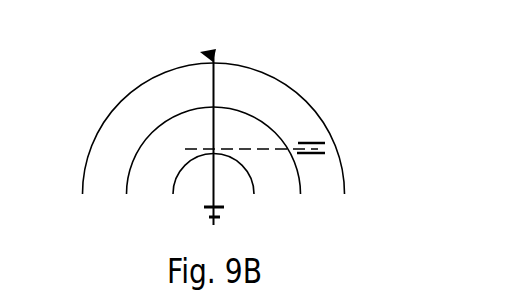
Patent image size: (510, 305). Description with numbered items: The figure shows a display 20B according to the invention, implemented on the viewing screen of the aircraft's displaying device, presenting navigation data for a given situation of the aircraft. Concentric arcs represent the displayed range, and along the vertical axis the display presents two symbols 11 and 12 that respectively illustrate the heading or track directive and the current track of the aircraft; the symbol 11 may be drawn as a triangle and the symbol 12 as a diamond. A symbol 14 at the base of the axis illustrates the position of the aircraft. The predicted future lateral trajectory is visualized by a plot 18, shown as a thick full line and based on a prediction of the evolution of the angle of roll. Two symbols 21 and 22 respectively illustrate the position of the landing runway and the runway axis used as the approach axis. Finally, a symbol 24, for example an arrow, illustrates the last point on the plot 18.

The symbol illustrating the heading directive 11 is at (200, 53).
The symbol illustrating the current track 12 is at (218, 53).
The symbol illustrating the position of the aircraft 14 is at (205, 212).
The plot 18 is at (213, 104).
The display according to the invention 20B is at (315, 86).
The symbol illustrating the position of the landing runway 21 is at (313, 154).
The symbol illustrating the axis of the runway 22 is at (270, 148).
The symbol illustrating the last point on the plot 24 is at (225, 184).